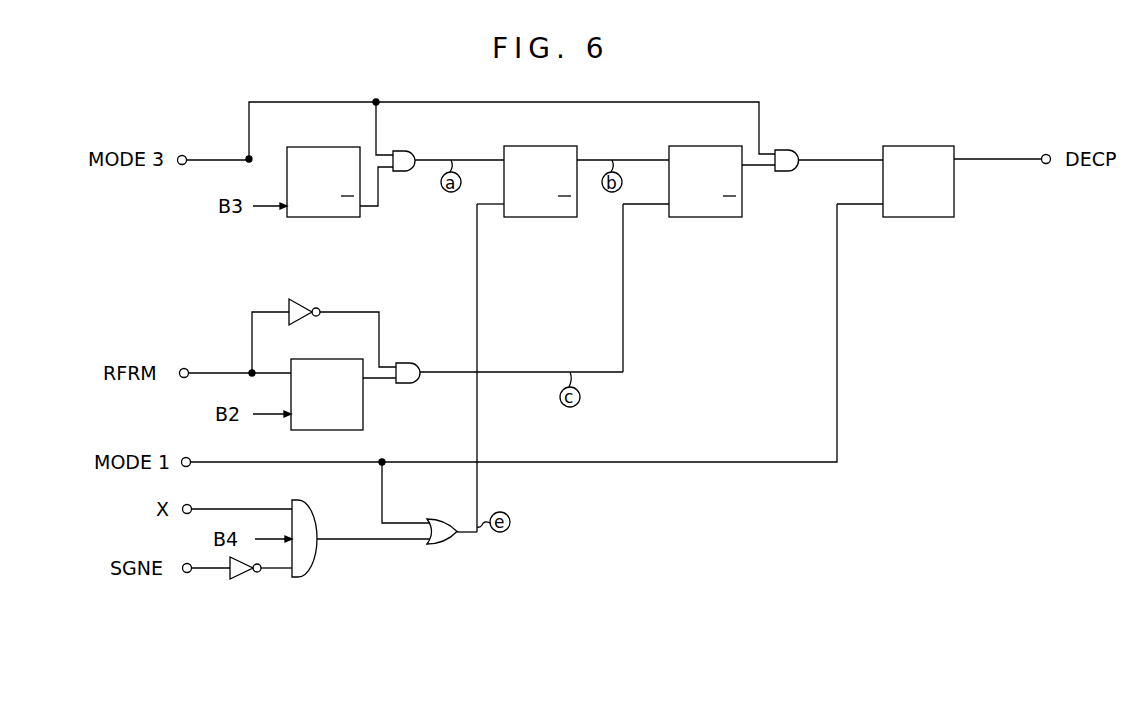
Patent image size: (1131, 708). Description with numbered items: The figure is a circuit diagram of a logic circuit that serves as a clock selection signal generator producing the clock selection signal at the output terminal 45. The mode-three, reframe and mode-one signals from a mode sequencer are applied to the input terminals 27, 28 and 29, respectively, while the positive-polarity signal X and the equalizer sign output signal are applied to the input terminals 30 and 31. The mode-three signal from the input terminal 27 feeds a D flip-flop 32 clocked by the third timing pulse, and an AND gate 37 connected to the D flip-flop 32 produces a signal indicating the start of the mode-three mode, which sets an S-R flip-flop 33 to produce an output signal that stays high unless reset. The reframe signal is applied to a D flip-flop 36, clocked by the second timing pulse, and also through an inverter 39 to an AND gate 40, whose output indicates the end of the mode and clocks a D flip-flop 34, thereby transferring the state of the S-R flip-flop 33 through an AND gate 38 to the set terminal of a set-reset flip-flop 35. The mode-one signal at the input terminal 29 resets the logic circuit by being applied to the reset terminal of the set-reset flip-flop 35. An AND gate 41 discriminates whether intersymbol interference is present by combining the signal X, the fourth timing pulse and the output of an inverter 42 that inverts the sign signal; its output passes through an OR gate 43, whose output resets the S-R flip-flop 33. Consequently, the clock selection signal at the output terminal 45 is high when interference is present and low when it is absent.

The input terminal 27 is at (182, 155).
The input terminal 28 is at (184, 368).
The input terminal 29 is at (186, 458).
The input terminal 30 is at (190, 505).
The input terminal 31 is at (187, 572).
The D flip-flop 32 is at (323, 147).
The S-R flip-flop 33 is at (540, 146).
The D flip-flop 34 is at (705, 146).
The set-reset flip-flop 35 is at (918, 146).
The D flip-flop 36 is at (363, 420).
The AND gate 37 is at (401, 150).
The AND gate 38 is at (786, 150).
The inverter 39 is at (301, 298).
The AND gate 40 is at (406, 362).
The AND gate 41 is at (315, 522).
The inverter 42 is at (243, 578).
The OR gate 43 is at (440, 545).
The output terminal 45 is at (1046, 154).